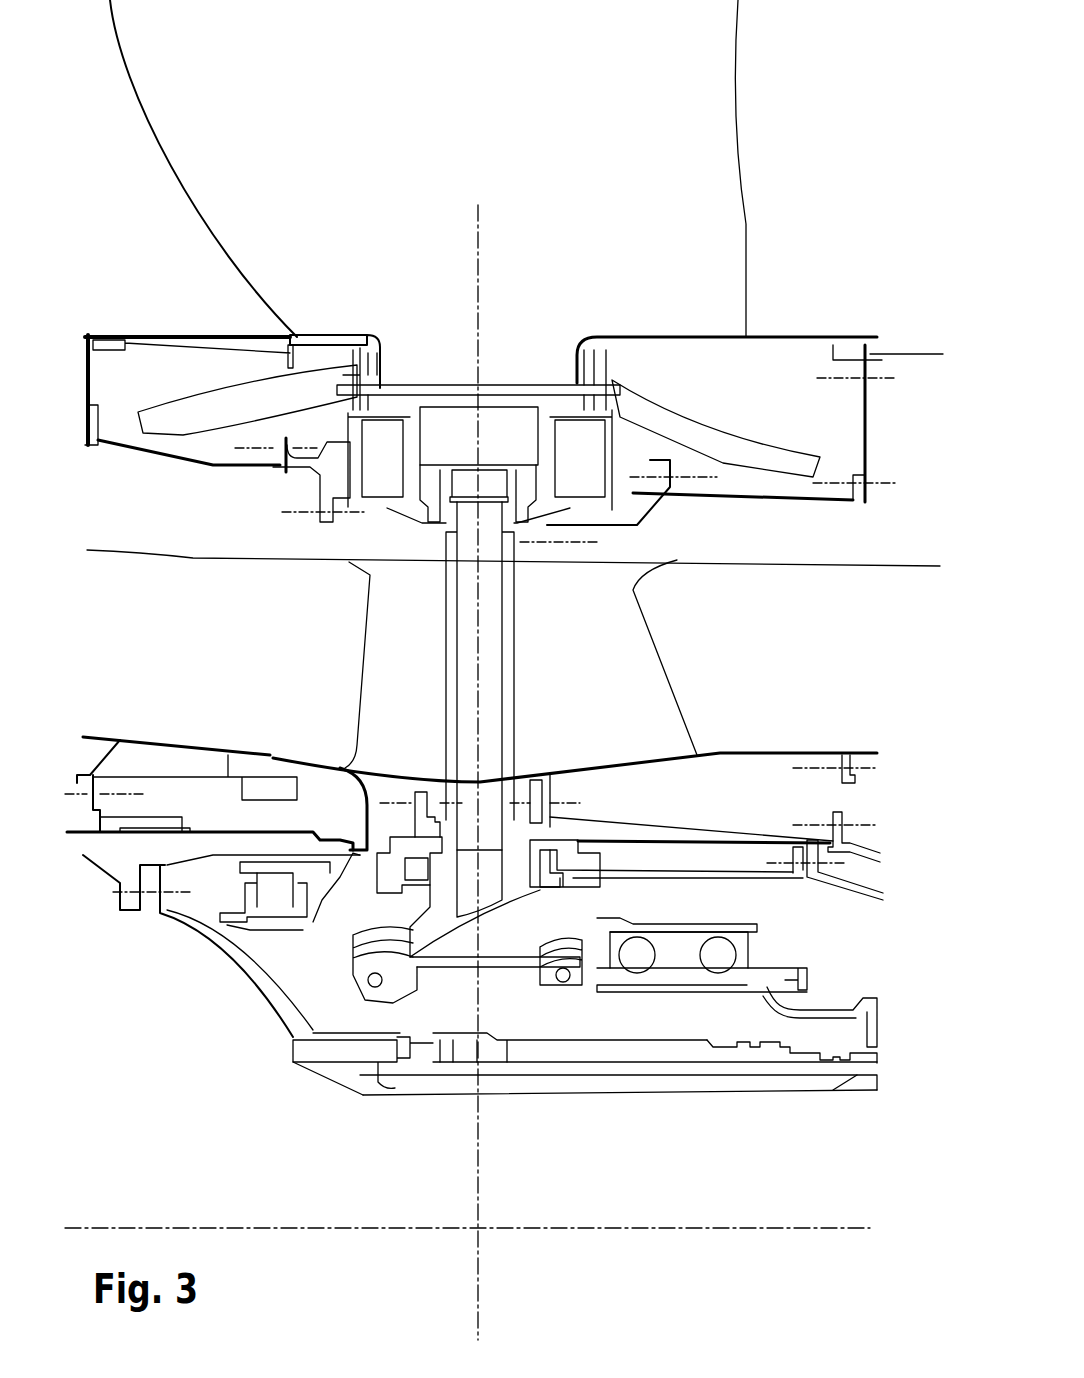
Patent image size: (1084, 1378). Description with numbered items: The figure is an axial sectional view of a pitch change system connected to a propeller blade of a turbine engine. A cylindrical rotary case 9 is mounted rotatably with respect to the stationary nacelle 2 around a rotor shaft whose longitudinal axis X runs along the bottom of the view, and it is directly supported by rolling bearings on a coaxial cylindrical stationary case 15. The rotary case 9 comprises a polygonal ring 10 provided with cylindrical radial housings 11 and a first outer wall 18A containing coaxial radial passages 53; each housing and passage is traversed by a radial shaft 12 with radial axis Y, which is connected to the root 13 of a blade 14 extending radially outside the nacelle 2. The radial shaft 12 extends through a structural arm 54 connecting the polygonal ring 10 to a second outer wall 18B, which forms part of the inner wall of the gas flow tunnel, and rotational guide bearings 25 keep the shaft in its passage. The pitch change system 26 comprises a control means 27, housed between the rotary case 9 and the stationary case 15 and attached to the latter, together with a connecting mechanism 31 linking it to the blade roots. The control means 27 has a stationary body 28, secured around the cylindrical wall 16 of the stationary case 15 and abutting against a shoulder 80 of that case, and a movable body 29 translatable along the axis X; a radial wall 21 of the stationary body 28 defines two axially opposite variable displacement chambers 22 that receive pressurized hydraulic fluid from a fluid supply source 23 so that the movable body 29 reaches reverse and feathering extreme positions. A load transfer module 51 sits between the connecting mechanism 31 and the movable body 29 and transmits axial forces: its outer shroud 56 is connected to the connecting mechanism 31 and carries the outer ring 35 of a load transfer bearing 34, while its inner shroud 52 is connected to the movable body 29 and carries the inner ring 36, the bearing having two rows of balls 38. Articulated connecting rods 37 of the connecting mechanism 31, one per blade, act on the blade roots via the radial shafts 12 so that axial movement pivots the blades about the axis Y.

The stationary nacelle 2 is at (903, 355).
The rotary case 9 is at (880, 840).
The polygonal ring 10 is at (870, 427).
The radial housings 11 is at (787, 400).
The radial shaft 12 is at (500, 618).
The blade root 13 is at (547, 403).
The blade 14 is at (618, 92).
The stationary case 15 is at (880, 1088).
The cylindrical wall 16 is at (385, 1097).
The first outer wall 18A is at (770, 837).
The second outer wall 18B is at (875, 748).
The radial wall 21 is at (777, 1055).
The variable displacement chambers 22 is at (672, 1050).
The fluid supply source 23 is at (653, 897).
The rotational guide bearings 25 is at (517, 957).
The pitch change system 26 is at (652, 997).
The control means 27 is at (885, 1057).
The stationary body 28 is at (805, 1070).
The movable body 29 is at (845, 1048).
The connecting mechanism 31 is at (464, 970).
The load transfer bearing 34 is at (742, 985).
The outer ring 35 is at (687, 942).
The inner ring 36 is at (692, 972).
The connecting rods 37 is at (528, 878).
The balls 38 is at (630, 968).
The load transfer module 51 is at (737, 1037).
The inner shroud 52 is at (862, 996).
The radial passages 53 is at (543, 815).
The structural arm 54 is at (400, 690).
The outer shroud 56 is at (758, 925).
The shoulder 80 is at (347, 1058).
The longitudinal axis X is at (120, 1228).
The radial axis Y is at (480, 250).